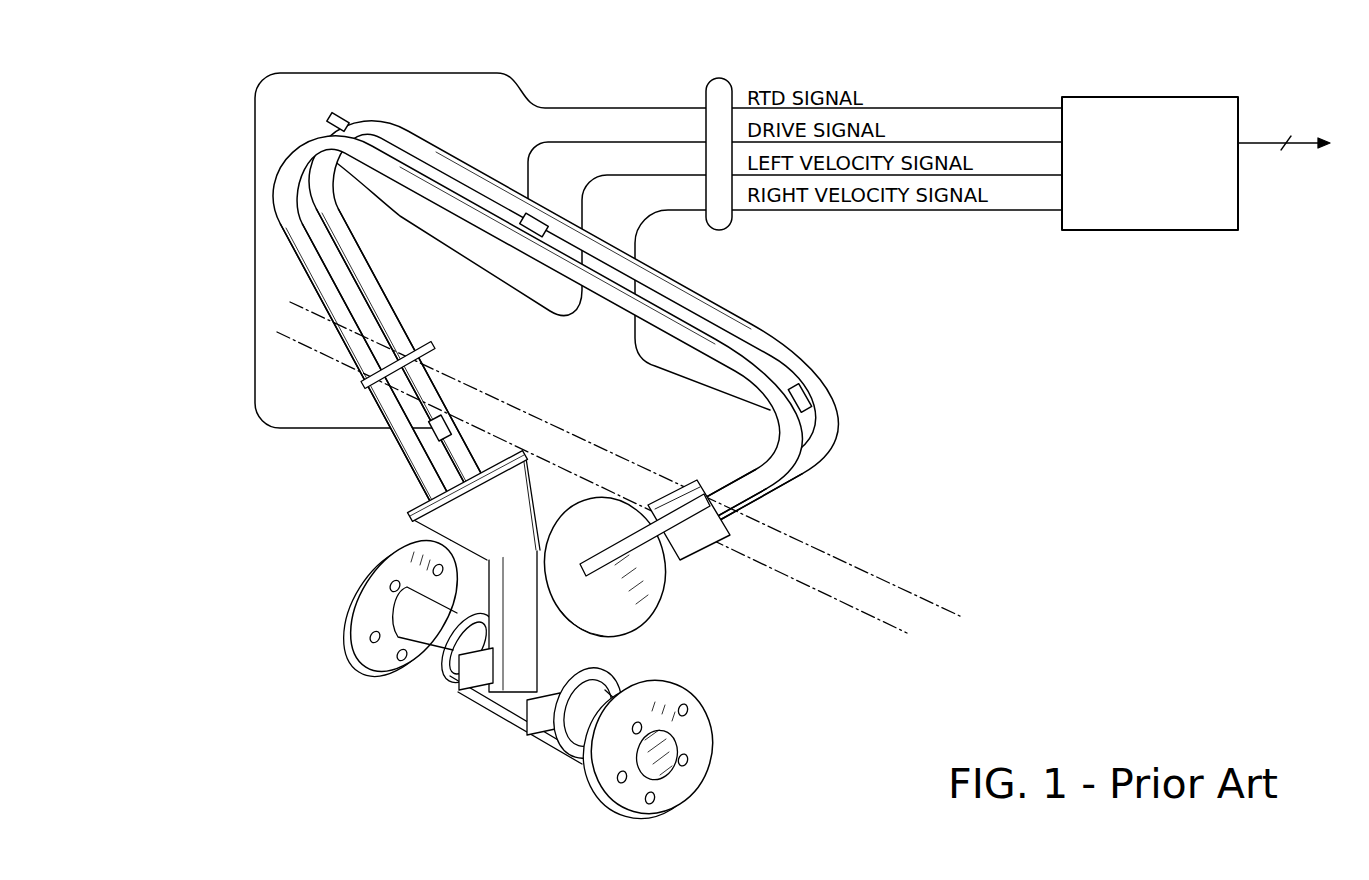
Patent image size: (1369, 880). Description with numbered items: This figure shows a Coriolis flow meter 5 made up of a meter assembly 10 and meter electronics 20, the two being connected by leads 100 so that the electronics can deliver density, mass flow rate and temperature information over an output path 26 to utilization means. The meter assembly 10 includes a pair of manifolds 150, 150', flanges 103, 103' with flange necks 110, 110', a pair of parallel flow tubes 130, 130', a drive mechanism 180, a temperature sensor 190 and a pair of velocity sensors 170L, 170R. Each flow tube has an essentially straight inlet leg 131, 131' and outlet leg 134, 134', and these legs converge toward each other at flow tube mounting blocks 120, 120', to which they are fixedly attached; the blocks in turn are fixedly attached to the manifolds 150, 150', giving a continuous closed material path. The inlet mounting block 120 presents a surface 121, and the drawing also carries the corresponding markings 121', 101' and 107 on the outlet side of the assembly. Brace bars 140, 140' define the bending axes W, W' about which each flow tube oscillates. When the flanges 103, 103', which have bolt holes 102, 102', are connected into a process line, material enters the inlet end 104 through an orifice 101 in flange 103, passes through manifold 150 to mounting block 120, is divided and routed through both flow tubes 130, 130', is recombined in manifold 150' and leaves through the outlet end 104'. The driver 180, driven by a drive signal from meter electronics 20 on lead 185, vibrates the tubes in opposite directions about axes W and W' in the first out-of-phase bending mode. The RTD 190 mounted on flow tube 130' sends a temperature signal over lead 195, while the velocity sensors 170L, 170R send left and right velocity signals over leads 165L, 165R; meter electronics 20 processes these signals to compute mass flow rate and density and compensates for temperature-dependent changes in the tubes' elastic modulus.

The flow meter 5 is at (1048, 362).
The meter assembly 10 is at (740, 575).
The meter electronics 20 is at (1190, 230).
The path 26 is at (1260, 145).
The leads 100 is at (705, 97).
The orifice 101 is at (362, 609).
The outlet flange 101' is at (672, 749).
The holes 102 is at (365, 633).
The bolt holes 102' is at (696, 737).
The flange 103 is at (385, 540).
The flange 103' is at (692, 771).
The inlet end 104 is at (299, 613).
The outlet end 104' is at (648, 846).
The spacer 107 is at (548, 465).
The flange neck 110 is at (449, 657).
The flange neck 110' is at (580, 751).
The flow tube mounting block 120 is at (443, 486).
The flow tube mounting block 120' is at (638, 569).
The surface 121 is at (506, 477).
The mounting block surface 121' is at (667, 504).
The flow tube 130 is at (537, 338).
The flow tube 130' is at (573, 323).
The inlet leg 131 is at (340, 382).
The inlet leg 131' is at (412, 367).
The outlet leg 134 is at (729, 474).
The outlet leg 134' is at (806, 480).
The brace bar 140 is at (367, 376).
The brace bar 140' is at (668, 553).
The manifold 150 is at (516, 647).
The manifold 150' is at (605, 705).
The lead 165L is at (1025, 177).
The lead 165R is at (977, 210).
The velocity sensor 170L is at (335, 116).
The velocity sensor 170R is at (812, 392).
The drive mechanism 180 is at (525, 216).
The lead 185 is at (1027, 143).
The temperature sensor 190 is at (442, 424).
The lead 195 is at (960, 108).
The bending axis W is at (606, 496).
The bending axis W' is at (640, 466).